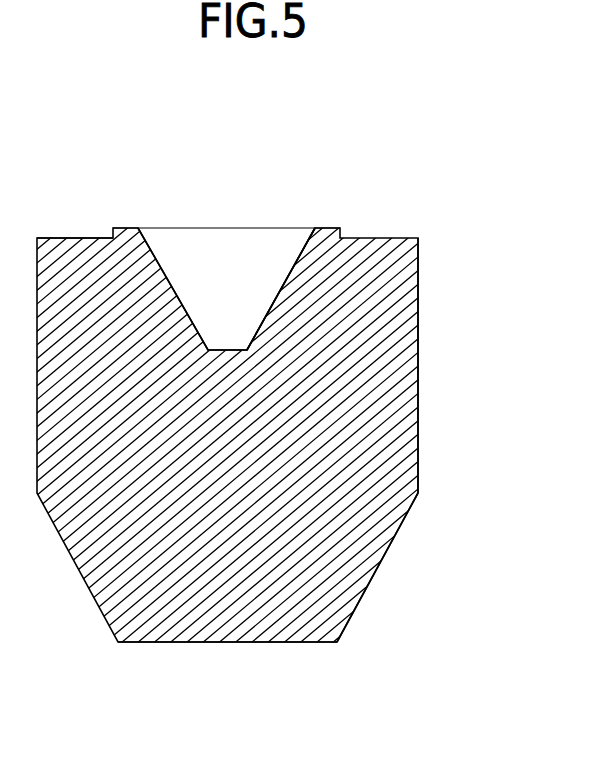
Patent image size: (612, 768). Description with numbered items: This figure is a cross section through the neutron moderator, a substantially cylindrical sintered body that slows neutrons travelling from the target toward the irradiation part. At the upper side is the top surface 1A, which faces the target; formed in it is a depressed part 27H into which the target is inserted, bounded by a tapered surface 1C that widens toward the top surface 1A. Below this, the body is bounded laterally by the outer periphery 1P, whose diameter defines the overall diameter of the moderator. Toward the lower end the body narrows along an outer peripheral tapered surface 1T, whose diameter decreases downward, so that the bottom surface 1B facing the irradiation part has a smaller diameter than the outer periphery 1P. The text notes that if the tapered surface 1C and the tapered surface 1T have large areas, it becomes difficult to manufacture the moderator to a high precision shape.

The top surface 1A is at (75, 238).
The depressed part 27H is at (225, 258).
The tapered surface 1C is at (300, 245).
The outer periphery 1P is at (418, 378).
The outer peripheral tapered surface 1T is at (383, 555).
The bottom surface 1B is at (163, 645).